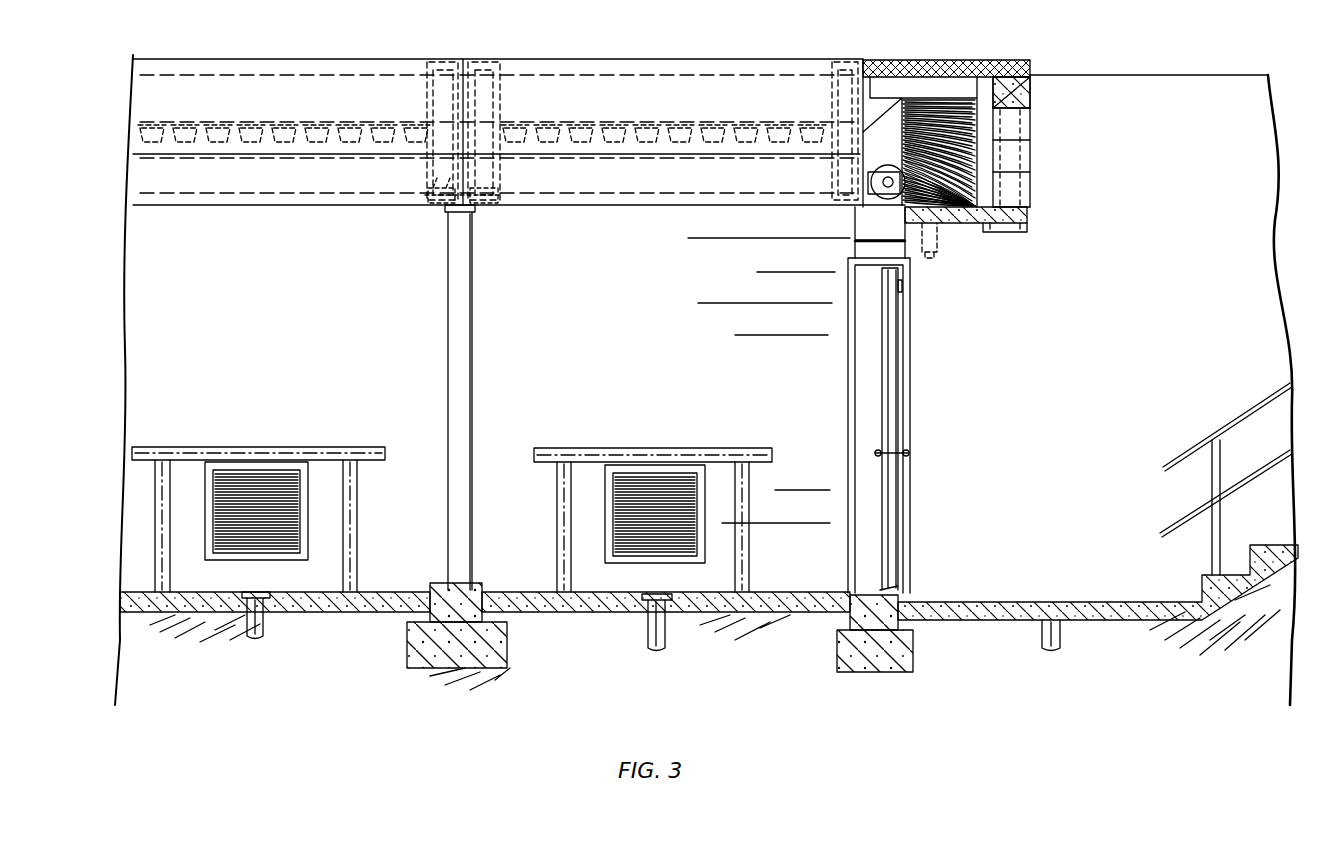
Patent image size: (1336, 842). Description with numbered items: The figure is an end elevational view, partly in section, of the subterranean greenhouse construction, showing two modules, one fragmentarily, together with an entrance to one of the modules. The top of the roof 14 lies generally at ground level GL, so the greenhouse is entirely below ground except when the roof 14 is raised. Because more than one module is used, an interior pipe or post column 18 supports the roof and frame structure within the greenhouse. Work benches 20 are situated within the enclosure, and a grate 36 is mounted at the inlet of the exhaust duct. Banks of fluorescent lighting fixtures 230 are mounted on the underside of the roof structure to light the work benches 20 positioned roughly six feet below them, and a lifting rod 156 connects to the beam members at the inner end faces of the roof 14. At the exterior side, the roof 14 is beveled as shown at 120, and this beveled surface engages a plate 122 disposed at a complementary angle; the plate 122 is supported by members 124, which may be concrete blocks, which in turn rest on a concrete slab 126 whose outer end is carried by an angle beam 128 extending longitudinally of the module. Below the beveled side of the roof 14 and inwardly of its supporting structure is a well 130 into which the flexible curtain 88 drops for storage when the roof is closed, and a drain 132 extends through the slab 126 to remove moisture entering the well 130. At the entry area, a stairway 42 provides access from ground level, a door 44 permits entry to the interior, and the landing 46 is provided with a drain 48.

The roof 14 is at (895, 60).
The pipe or post column 18 is at (465, 402).
The work bench 20 is at (353, 445).
The grate 36 is at (283, 535).
The stairway 42 is at (1220, 418).
The door 44 is at (893, 412).
The landing 46 is at (988, 602).
The drain 48 is at (1058, 638).
The flexible curtain 88 is at (930, 93).
The beveled surface 120 is at (1051, 108).
The plate 122 is at (1030, 86).
The support members 124 is at (1018, 162).
The concrete slab 126 is at (975, 225).
The angle beam 128 is at (1010, 232).
The well 130 is at (912, 193).
The drain 132 is at (930, 258).
The lifting rod 156 is at (420, 215).
The fluorescent lighting fixtures 230 is at (672, 152).
The ground level GL is at (1075, 75).